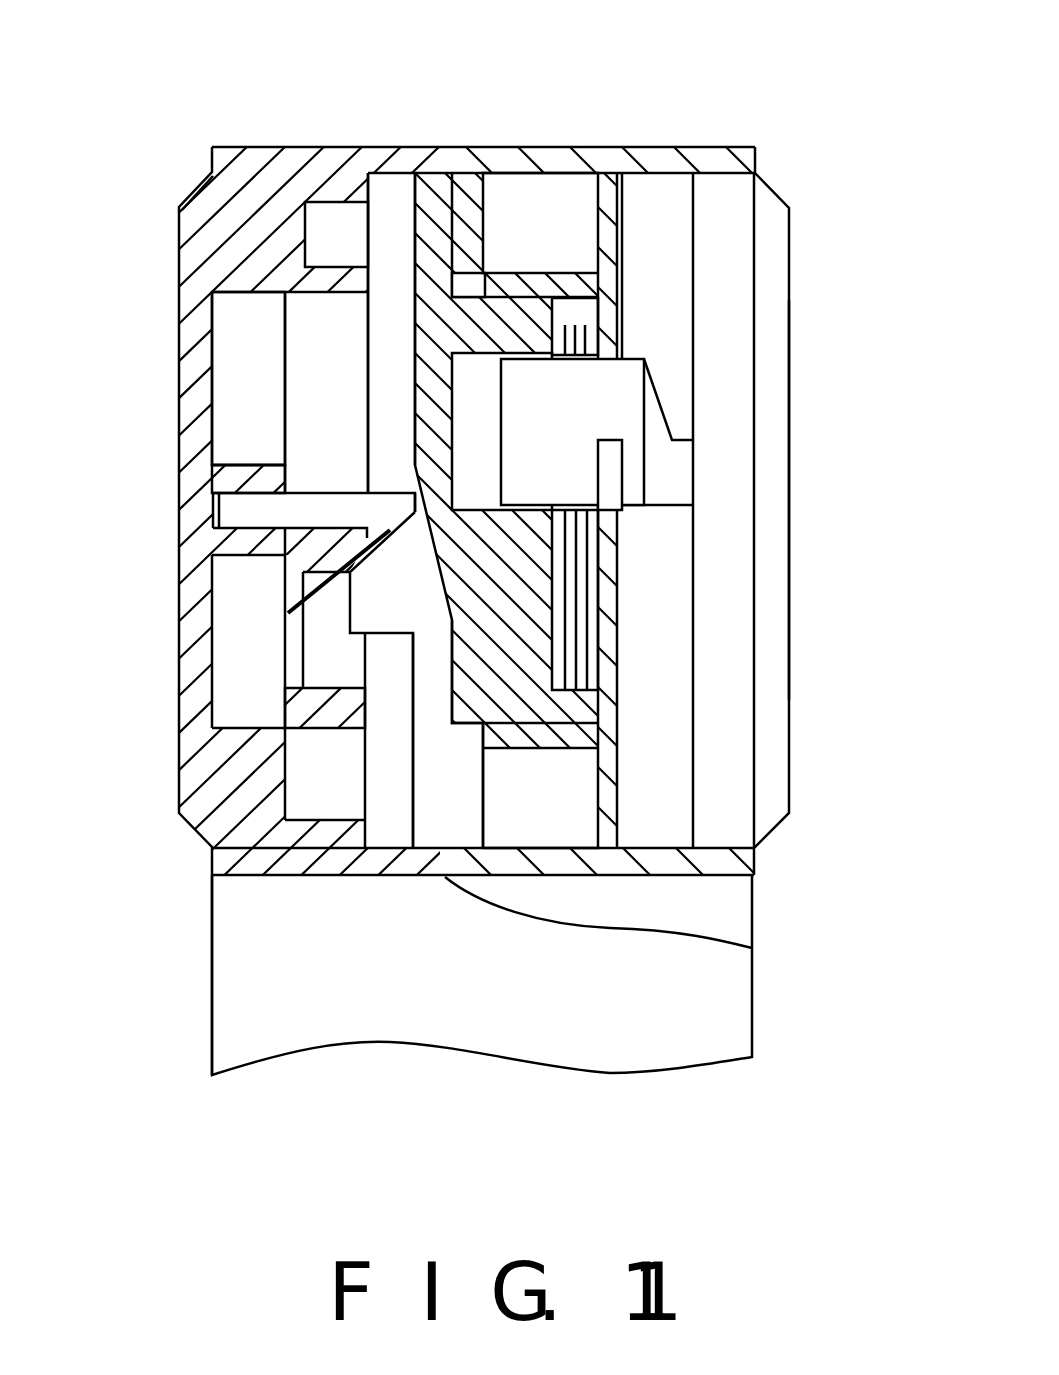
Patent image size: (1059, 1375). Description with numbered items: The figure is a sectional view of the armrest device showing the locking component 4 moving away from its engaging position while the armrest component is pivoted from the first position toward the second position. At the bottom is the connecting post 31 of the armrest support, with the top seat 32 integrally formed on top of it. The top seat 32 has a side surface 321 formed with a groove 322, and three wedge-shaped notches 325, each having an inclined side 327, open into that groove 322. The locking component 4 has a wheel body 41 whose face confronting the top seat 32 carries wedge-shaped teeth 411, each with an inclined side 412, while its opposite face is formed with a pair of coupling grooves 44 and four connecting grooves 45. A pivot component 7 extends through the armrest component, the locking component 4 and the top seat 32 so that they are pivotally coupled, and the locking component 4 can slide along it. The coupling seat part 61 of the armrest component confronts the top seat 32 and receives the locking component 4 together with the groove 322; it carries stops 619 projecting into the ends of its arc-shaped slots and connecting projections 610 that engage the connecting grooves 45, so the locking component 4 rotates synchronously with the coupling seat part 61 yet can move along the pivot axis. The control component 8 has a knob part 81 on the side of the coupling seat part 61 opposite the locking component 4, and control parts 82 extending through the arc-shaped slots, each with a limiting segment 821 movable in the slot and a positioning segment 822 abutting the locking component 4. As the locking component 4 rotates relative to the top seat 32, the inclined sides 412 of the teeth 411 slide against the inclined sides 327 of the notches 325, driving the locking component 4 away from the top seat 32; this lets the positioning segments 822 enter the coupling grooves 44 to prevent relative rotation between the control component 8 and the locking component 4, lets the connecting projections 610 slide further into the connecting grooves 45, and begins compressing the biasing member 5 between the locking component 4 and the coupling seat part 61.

The locking component 4 is at (397, 828).
The top seat 32 is at (212, 150).
The control component 8 is at (813, 226).
The knob part 81 is at (782, 333).
The coupling seat part 61 is at (665, 197).
The control part 82 is at (650, 316).
The connecting projection 610 is at (522, 282).
The coupling groove 44 is at (473, 440).
The positioning segment 822 is at (553, 460).
The biasing member 5 is at (568, 640).
The limiting segment 821 is at (622, 485).
The stop 619 is at (603, 360).
The groove 322 is at (240, 325).
The wheel body 41 is at (410, 360).
The pivot component 7 is at (268, 512).
The side surface 321 is at (382, 523).
The inclined side 412 is at (343, 563).
The wedge-shaped tooth 411 is at (387, 627).
The inclined side 327 is at (330, 653).
The wedge-shaped notch 325 is at (320, 590).
The connecting groove 45 is at (460, 820).
The connecting post 31 is at (665, 1020).